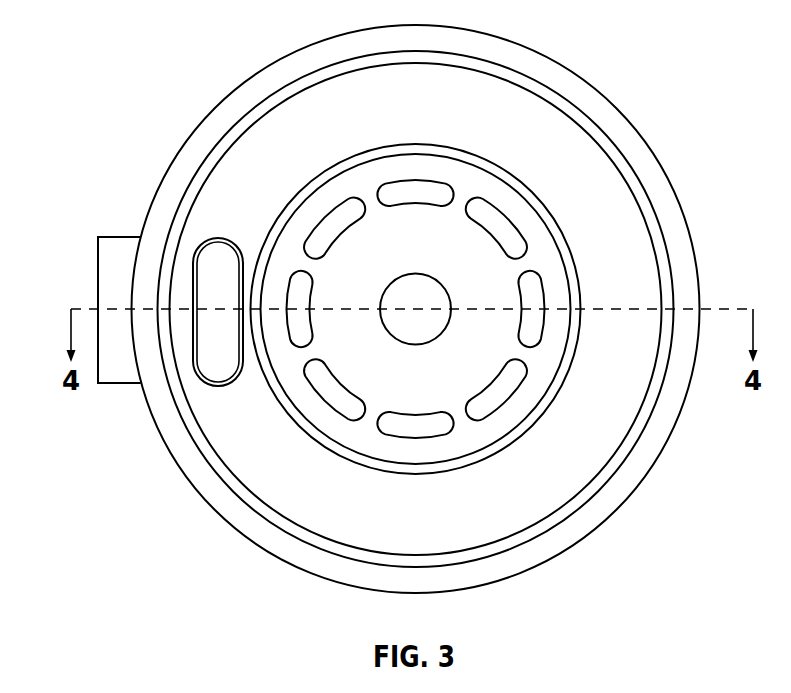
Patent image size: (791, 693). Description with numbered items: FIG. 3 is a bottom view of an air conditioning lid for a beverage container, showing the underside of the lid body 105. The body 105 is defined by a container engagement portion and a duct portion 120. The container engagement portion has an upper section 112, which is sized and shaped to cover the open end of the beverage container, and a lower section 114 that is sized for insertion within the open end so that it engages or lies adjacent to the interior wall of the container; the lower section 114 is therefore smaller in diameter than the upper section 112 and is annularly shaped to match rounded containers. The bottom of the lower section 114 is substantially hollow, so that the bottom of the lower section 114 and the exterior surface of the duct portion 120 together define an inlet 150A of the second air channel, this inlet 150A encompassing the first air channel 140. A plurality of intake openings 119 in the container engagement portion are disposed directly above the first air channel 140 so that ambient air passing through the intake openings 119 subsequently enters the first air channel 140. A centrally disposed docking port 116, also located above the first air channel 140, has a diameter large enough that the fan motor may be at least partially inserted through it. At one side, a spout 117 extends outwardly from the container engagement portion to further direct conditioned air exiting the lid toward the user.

The body 105 is at (174, 62).
The upper section 112 is at (188, 466).
The lower section 114 is at (278, 521).
The docking port 116 is at (426, 290).
The spout 117 is at (122, 237).
The intake opening 119 is at (316, 210).
The duct portion 120 is at (572, 258).
The first air channel 140 is at (446, 228).
The inlet 150A is at (494, 522).